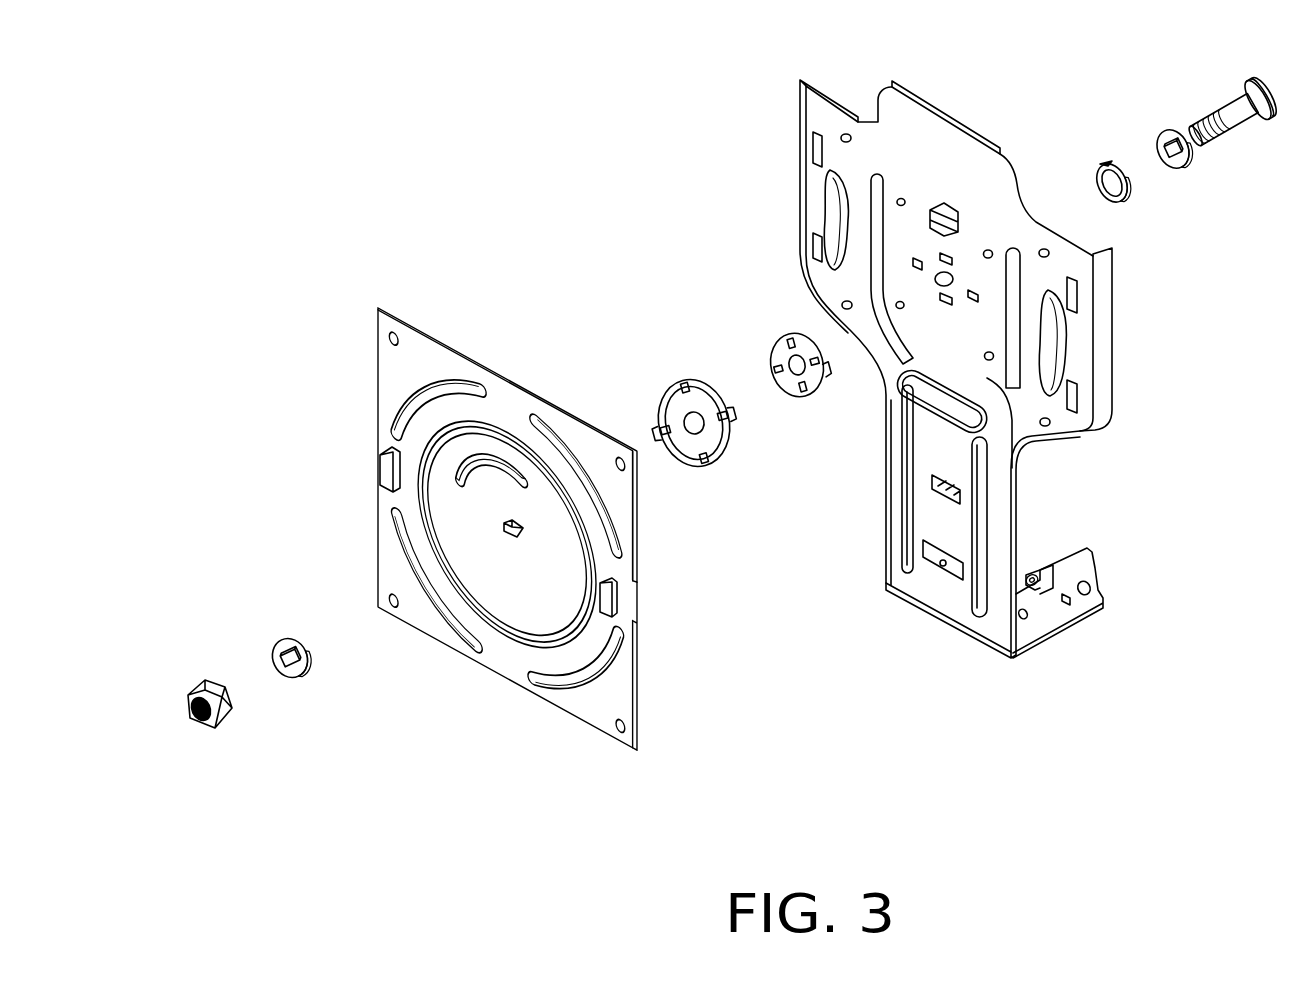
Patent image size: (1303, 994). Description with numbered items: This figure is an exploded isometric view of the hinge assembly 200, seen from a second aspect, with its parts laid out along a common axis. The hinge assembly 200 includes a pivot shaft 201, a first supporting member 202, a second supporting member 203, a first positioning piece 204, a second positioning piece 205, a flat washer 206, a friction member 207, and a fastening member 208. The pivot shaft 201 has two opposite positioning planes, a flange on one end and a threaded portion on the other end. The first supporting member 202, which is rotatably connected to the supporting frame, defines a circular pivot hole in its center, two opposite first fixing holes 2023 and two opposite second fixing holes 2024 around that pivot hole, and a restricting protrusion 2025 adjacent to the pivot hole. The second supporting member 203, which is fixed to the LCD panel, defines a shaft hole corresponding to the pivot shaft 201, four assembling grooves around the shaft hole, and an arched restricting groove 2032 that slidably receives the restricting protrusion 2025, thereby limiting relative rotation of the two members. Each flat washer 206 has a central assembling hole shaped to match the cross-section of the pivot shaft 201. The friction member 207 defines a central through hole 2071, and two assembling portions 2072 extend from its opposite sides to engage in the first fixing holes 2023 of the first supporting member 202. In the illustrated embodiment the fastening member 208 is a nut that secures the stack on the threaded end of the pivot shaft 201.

The hinge assembly 200 is at (548, 182).
The pivot shaft 201 is at (1233, 105).
The first supporting member 202 is at (1070, 440).
The first fixing holes 2023 is at (946, 257).
The second fixing holes 2024 is at (976, 291).
The restricting protrusion 2025 is at (941, 208).
The second supporting member 203 is at (600, 722).
The restricting groove 2032 is at (468, 472).
The first positioning piece 204 is at (809, 395).
The second positioning piece 205 is at (712, 470).
The flat washer 206 is at (1185, 160).
The friction member 207 is at (1125, 185).
The through hole 2071 is at (1122, 190).
The assembling portions 2072 is at (1107, 165).
The fastening member 208 is at (226, 712).